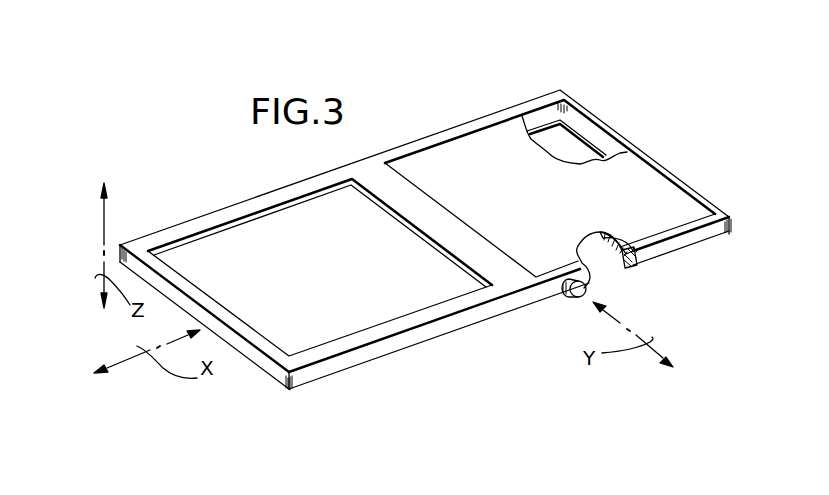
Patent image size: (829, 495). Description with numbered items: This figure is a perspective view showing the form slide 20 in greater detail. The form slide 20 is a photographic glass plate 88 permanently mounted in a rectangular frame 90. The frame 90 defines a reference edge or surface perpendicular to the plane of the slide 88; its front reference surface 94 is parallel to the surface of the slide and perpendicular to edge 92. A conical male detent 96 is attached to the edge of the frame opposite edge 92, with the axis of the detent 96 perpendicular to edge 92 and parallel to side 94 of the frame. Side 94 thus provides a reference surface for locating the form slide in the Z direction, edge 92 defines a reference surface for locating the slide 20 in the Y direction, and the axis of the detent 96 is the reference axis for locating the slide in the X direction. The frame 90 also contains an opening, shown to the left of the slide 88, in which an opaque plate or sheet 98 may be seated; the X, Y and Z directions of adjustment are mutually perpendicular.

The form slide 20 is at (680, 183).
The photographic glass plate 88 is at (626, 172).
The rectangular frame 90 is at (204, 223).
The edge 92 is at (313, 177).
The front reference surface 94 is at (380, 178).
The conical male detent 96 is at (563, 298).
The opaque plate or sheet 98 is at (252, 233).